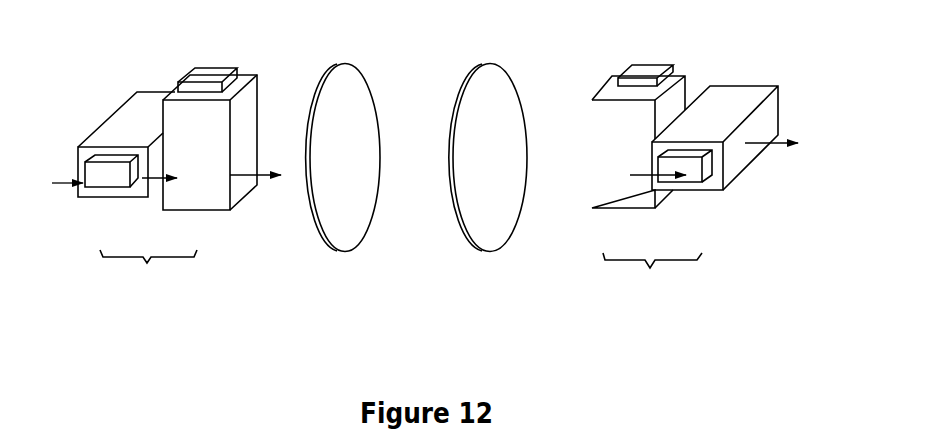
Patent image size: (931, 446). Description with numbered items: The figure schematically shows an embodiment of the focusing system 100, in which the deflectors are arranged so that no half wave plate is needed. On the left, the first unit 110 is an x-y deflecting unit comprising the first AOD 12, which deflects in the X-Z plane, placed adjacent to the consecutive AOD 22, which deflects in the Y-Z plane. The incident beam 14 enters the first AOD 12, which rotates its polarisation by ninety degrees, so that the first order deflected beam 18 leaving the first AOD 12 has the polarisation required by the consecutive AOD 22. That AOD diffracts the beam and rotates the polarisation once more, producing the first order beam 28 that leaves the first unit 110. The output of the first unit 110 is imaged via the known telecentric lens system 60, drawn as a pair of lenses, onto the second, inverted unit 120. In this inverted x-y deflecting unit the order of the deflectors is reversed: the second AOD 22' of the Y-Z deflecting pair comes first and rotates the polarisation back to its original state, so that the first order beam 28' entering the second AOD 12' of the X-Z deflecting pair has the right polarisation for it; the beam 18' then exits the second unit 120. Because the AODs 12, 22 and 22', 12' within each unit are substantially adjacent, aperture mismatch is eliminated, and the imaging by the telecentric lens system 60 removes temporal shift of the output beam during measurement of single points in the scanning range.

The focusing system 100 is at (85, 84).
The first AOD 12 is at (126, 106).
The consecutive AOD 22 is at (212, 50).
The incident beam 14 is at (66, 167).
The first order deflected beam 18 is at (160, 163).
The first order beam 28 is at (255, 161).
The first unit 110 is at (154, 262).
The telecentric lens system 60 is at (465, 247).
The second AOD of the second pair of AODs 22' is at (647, 43).
The second AOD of the first pair of AODs 12' is at (715, 108).
The output beam of inverted unit 18' is at (790, 129).
The first order beam exiting the second pair of AODs 28' is at (653, 169).
The second, inverted unit 120 is at (677, 192).